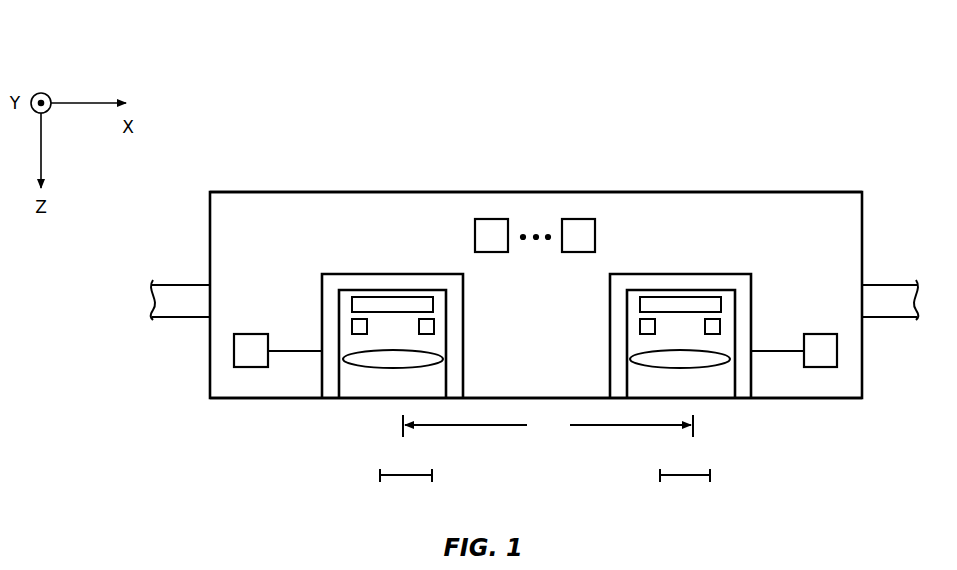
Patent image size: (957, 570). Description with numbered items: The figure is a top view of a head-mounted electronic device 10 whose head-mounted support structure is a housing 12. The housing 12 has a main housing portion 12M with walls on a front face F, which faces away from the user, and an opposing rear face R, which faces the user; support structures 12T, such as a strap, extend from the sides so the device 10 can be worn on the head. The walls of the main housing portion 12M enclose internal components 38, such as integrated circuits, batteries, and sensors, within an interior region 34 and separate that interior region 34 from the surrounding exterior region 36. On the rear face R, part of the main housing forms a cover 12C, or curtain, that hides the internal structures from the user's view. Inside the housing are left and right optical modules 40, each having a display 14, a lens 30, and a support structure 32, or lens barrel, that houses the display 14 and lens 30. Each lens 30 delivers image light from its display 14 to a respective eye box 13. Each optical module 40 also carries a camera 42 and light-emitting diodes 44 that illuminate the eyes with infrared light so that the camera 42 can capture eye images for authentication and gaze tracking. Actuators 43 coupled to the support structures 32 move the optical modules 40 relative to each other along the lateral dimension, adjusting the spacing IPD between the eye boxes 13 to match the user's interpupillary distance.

The electronic device 10 is at (535, 250).
The housing 12 is at (804, 203).
The main housing portion 12M is at (236, 186).
The support structures 12T is at (180, 303).
The cover 12C is at (226, 400).
The eye boxes 13 is at (432, 475).
The displays 14 is at (415, 303).
The lenses 30 is at (443, 359).
The support structures 32 is at (342, 283).
The interior region 34 is at (828, 240).
The exterior region 36 is at (351, 159).
The internal components 38 is at (490, 230).
The optical modules 40 is at (311, 386).
The camera 42 is at (640, 327).
The actuators 43 is at (250, 350).
The light-emitting diodes 44 is at (353, 323).
The front face F is at (668, 176).
The rear face R is at (816, 426).
The interpupillary distance IPD is at (548, 426).